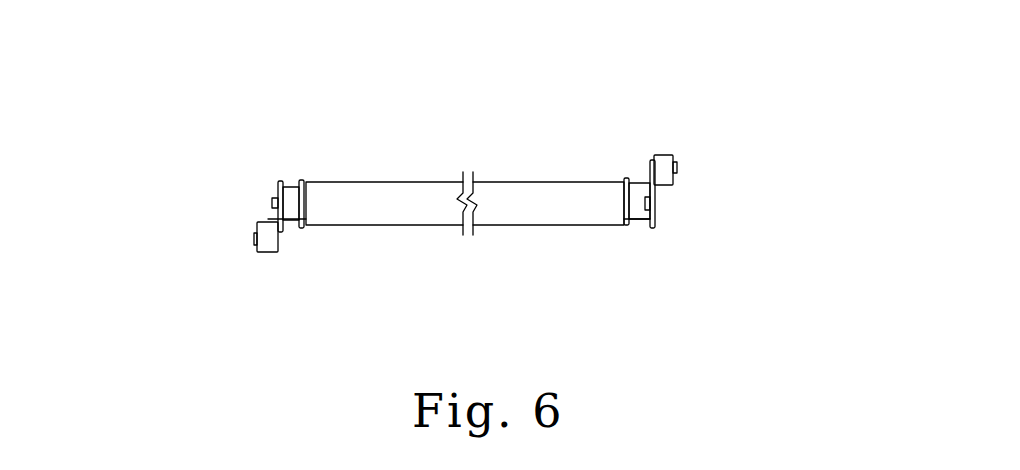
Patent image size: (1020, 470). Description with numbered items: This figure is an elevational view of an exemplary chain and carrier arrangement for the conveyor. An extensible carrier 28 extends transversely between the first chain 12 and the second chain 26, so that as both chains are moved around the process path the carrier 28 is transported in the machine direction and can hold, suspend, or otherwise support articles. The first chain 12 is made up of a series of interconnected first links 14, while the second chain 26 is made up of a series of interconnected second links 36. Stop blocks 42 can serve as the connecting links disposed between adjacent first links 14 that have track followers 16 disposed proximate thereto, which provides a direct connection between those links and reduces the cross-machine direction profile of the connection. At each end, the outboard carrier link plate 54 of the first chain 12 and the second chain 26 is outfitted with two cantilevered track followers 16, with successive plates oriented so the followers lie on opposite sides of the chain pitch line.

The first chain 12 is at (231, 214).
The first links 14 is at (288, 205).
The track follower 16 is at (264, 252).
The second chain 26 is at (707, 216).
The extensible carriers 28 is at (358, 208).
The second links 36 is at (632, 188).
The stop blocks 42 is at (302, 180).
The outboard carrier link plate 54 is at (281, 228).